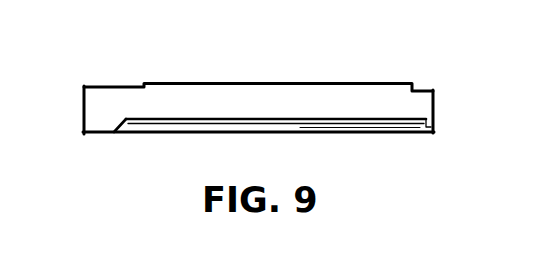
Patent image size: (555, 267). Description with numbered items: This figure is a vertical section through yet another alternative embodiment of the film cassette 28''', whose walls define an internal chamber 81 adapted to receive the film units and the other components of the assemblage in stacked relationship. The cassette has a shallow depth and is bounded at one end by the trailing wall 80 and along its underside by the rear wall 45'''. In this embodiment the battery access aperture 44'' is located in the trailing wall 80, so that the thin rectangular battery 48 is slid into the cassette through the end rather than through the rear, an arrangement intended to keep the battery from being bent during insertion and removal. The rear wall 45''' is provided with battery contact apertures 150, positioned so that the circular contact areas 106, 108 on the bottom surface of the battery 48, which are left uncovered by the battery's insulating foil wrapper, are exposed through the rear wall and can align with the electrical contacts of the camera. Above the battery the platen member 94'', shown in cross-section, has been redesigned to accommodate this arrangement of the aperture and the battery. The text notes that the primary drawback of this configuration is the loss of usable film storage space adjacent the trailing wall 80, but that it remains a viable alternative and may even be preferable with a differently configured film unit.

The cassette 28''' is at (258, 58).
The chamber 81 is at (111, 109).
The trailing wall 80 is at (435, 96).
The rear wall 45''' is at (258, 150).
The platen member 94'' is at (276, 88).
The battery 48 is at (185, 128).
The battery access aperture 44'' is at (459, 138).
The battery contact apertures 150 is at (373, 133).
The contact area 106 is at (383, 162).
The contact area 108 is at (397, 133).